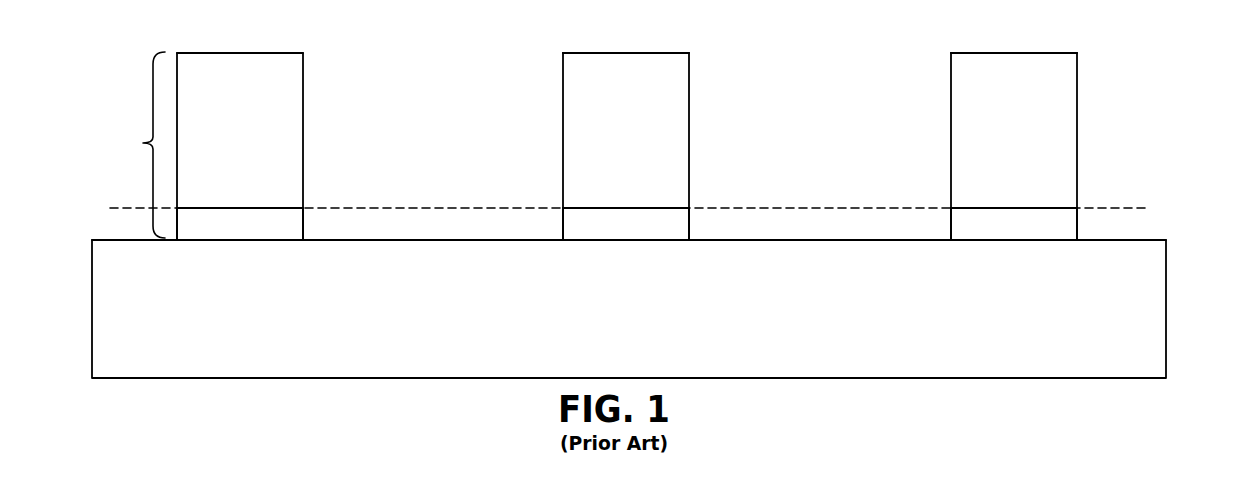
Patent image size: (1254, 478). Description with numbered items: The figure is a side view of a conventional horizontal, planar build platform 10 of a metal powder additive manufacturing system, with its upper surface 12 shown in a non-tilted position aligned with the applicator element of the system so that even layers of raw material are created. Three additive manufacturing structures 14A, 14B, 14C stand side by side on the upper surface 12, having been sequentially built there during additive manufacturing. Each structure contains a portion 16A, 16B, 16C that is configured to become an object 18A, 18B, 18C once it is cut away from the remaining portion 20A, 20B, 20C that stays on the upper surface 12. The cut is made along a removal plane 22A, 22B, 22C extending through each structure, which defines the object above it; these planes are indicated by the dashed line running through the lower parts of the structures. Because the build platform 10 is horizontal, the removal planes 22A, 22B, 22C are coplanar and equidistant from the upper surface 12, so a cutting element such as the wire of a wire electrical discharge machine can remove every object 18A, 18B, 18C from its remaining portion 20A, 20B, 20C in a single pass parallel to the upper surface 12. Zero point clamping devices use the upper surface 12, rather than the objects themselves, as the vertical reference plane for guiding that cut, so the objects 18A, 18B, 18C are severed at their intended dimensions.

The build platform 10 is at (1143, 300).
The upper surface 12 is at (1143, 240).
The additive manufacturing structure 14A is at (303, 108).
The additive manufacturing structure 14B is at (689, 108).
The additive manufacturing structure 14C is at (1077, 120).
The portion 16A is at (128, 145).
The portion 16B is at (637, 63).
The portion 16C is at (1027, 63).
The object 18A is at (257, 65).
The object 18B is at (637, 63).
The object 18C is at (1027, 63).
The remaining portion 20A is at (252, 222).
The remaining portion 20B is at (655, 222).
The remaining portion 20C is at (1017, 217).
The removal plane 22A is at (265, 207).
The removal plane 22B is at (605, 207).
The removal plane 22C is at (986, 207).